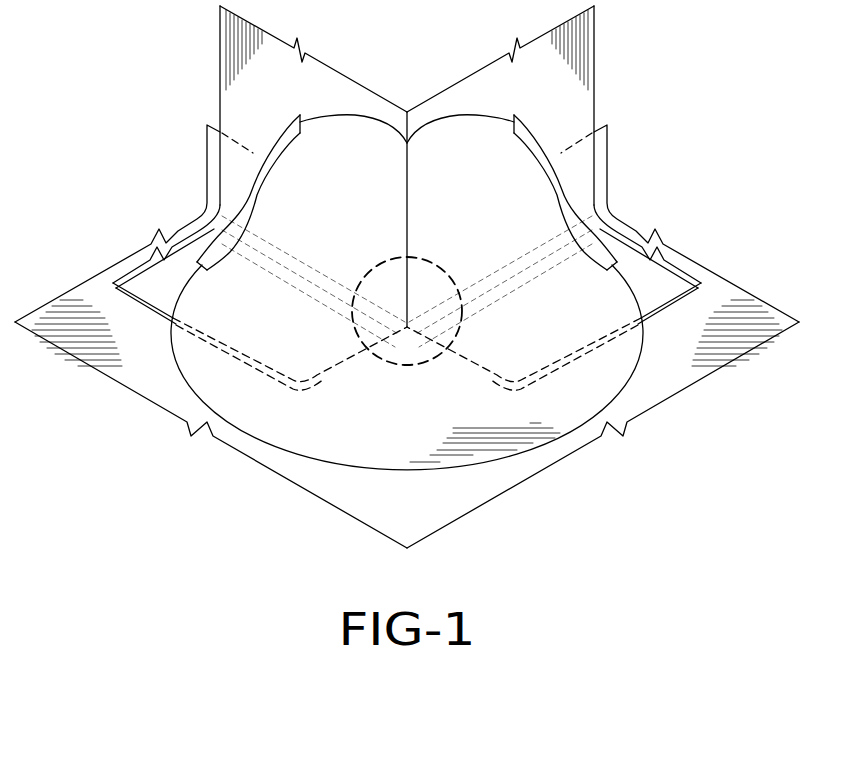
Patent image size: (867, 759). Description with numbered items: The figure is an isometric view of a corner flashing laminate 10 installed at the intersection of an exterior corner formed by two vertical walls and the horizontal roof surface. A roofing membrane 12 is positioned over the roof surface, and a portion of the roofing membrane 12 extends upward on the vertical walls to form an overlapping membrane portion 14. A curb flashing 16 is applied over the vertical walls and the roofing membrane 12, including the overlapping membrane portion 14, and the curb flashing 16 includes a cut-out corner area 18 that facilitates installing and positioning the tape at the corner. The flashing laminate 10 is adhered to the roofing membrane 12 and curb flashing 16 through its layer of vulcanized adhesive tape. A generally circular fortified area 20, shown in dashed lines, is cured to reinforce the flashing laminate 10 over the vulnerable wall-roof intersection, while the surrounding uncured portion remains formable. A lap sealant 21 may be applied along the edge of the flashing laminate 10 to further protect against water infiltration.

The flashing laminate 10 is at (407, 196).
The roofing membrane 12 is at (736, 313).
The overlapping membrane portion 14 is at (601, 170).
The curb flashing 16 is at (245, 72).
The cut-out corner area 18 is at (466, 380).
The fortified area 20 is at (355, 338).
The lap sealant 21 is at (274, 136).